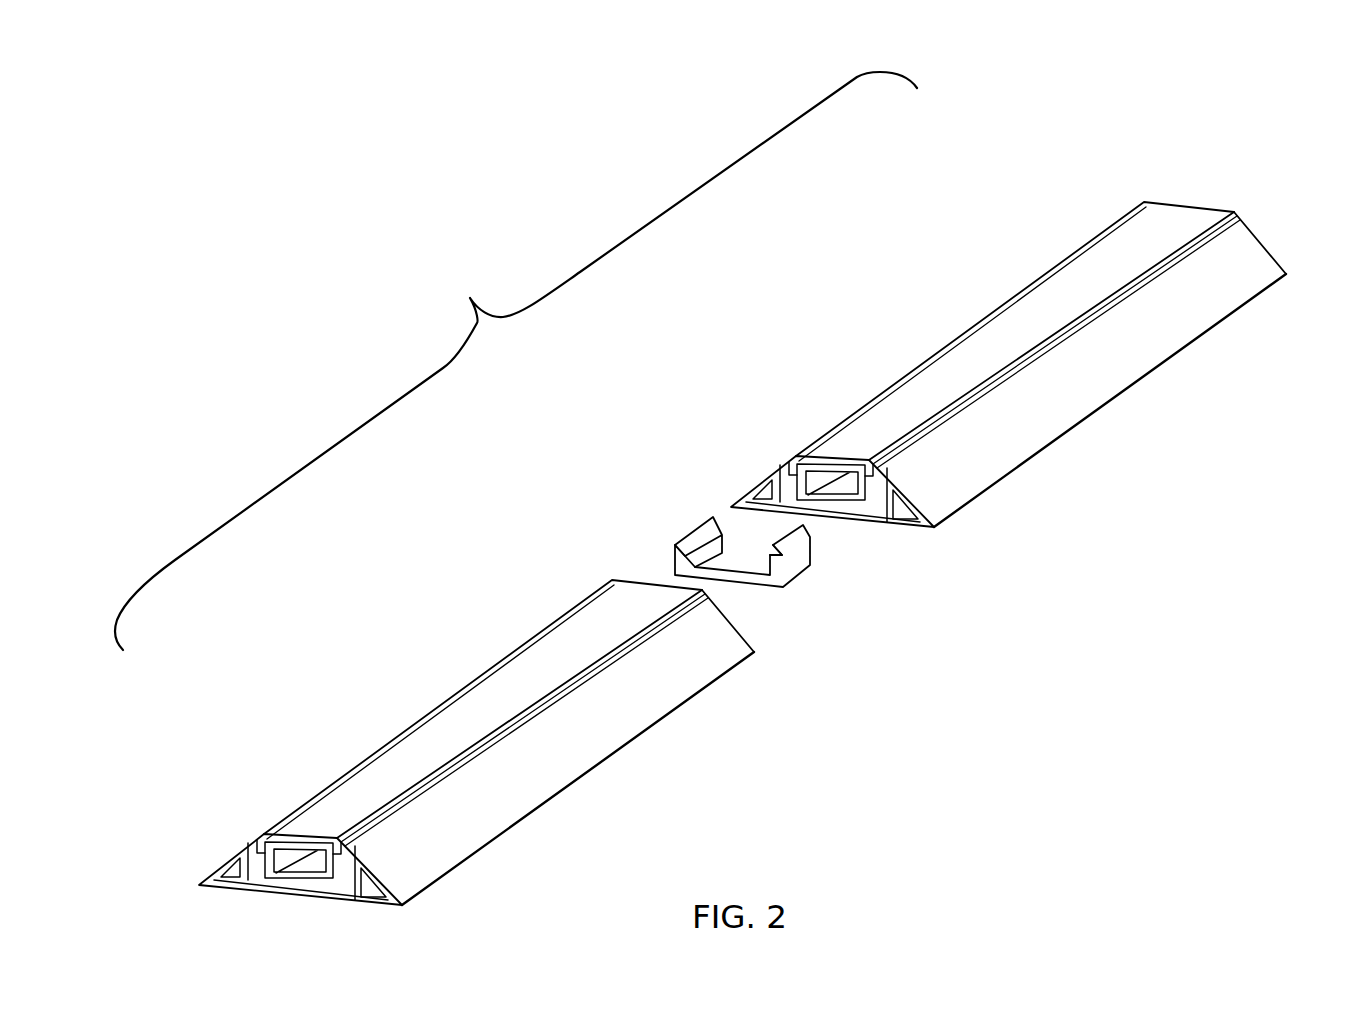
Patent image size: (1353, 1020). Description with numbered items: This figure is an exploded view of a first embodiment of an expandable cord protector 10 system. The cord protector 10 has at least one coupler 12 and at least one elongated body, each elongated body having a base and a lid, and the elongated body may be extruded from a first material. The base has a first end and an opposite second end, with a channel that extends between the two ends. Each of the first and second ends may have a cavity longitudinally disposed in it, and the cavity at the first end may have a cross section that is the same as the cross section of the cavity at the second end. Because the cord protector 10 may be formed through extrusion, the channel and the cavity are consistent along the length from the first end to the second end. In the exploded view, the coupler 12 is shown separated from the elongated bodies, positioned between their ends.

The expandable cord protector 10 is at (516, 361).
The coupler 12 is at (692, 523).